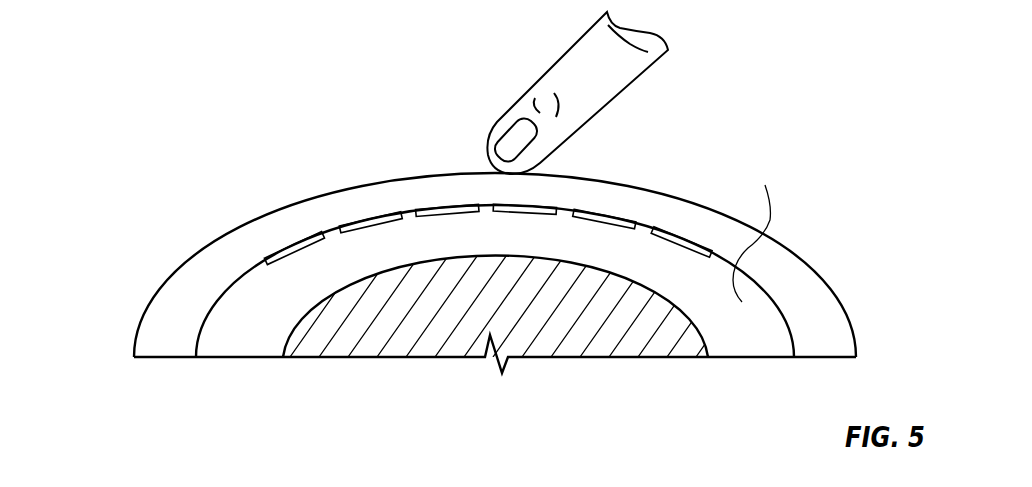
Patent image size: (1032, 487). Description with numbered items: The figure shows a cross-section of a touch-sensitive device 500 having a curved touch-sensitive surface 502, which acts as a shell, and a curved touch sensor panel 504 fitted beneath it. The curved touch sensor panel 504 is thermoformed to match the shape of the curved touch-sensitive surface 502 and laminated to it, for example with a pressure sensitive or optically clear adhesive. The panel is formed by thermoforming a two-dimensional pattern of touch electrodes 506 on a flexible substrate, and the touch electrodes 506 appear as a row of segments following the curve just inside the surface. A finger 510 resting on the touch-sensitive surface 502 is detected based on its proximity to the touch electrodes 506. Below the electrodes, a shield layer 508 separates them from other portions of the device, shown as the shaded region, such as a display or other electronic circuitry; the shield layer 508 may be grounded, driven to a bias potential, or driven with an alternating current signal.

The touch-sensitive device 500 is at (252, 13).
The curved touch-sensitive surface 502 is at (435, 175).
The curved touch sensor panel 504 is at (283, 358).
The touch electrodes 506 is at (293, 243).
The shield layer 508 is at (333, 287).
The finger 510 is at (643, 78).